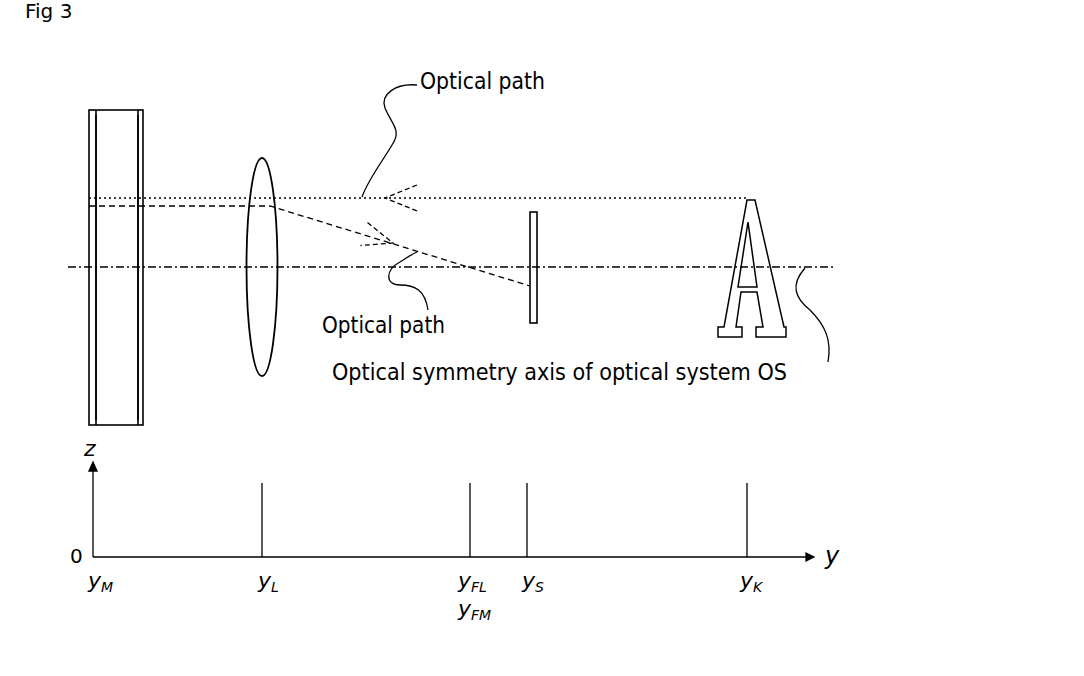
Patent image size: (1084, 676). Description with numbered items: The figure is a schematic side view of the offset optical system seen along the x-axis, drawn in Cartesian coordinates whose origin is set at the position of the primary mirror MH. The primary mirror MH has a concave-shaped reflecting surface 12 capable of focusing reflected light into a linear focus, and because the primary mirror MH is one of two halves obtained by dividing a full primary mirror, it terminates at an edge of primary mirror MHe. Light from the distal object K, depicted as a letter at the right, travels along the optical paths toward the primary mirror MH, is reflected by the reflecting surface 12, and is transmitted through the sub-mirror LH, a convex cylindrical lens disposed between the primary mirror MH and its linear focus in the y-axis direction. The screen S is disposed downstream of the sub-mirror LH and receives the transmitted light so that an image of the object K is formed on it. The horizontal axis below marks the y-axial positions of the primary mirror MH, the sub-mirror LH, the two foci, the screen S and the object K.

The primary mirror MH is at (92, 108).
The reflecting surface 12 is at (128, 158).
The edge of primary mirror MHe is at (143, 327).
The sub-mirror LH is at (263, 172).
The screen S is at (528, 242).
The object K is at (740, 278).